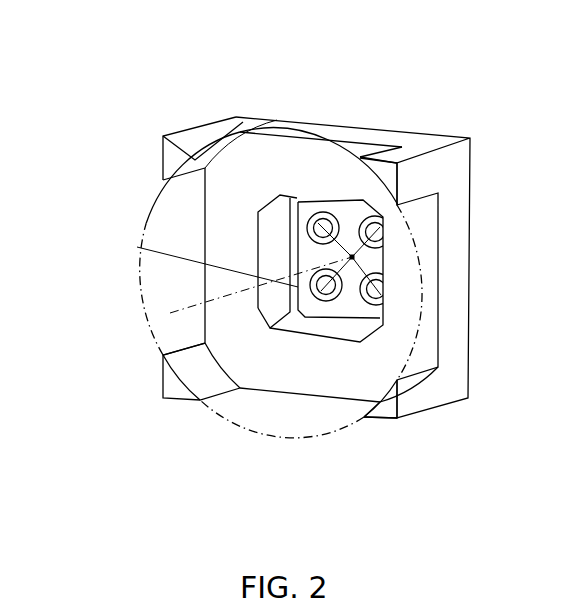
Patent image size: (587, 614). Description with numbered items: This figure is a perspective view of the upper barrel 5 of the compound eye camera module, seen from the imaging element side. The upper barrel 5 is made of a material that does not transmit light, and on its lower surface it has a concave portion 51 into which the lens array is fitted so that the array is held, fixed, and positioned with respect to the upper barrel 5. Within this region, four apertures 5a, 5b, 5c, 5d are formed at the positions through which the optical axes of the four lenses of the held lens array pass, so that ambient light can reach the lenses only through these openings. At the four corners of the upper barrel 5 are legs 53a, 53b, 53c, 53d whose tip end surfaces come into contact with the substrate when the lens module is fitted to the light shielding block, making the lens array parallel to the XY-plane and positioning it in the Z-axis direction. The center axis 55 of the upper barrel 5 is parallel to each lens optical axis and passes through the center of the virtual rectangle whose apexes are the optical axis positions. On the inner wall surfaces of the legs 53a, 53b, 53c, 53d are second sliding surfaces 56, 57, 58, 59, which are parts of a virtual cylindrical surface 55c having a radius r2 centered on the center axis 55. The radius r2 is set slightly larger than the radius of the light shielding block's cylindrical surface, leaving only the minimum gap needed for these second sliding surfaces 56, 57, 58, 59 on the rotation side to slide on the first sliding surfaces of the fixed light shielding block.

The upper barrel 5 is at (228, 82).
The aperture 5a is at (326, 300).
The aperture 5b is at (383, 314).
The aperture 5c is at (322, 213).
The aperture 5d is at (362, 222).
The concave portion 51 is at (279, 325).
The leg 53a is at (173, 393).
The leg 53b is at (414, 394).
The leg 53c is at (190, 130).
The leg 53d is at (427, 181).
The center axis 55 is at (186, 309).
The virtual cylindrical surface 55c is at (138, 273).
The second sliding surface 56 is at (197, 369).
The second sliding surface 57 is at (384, 402).
The second sliding surface 58 is at (196, 160).
The second sliding surface 59 is at (380, 178).
The radius r2 is at (137, 247).